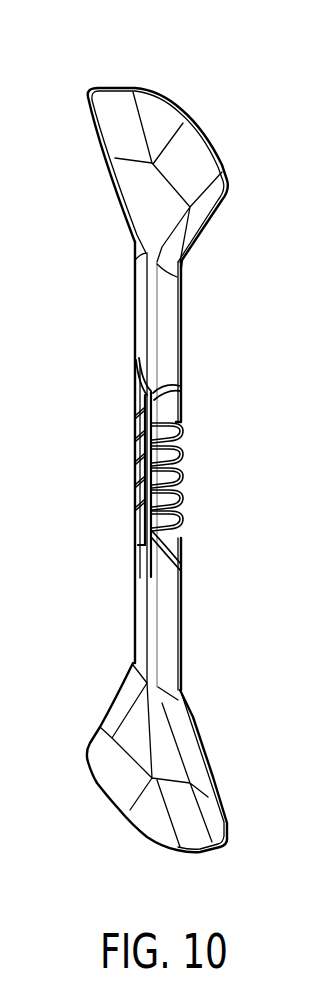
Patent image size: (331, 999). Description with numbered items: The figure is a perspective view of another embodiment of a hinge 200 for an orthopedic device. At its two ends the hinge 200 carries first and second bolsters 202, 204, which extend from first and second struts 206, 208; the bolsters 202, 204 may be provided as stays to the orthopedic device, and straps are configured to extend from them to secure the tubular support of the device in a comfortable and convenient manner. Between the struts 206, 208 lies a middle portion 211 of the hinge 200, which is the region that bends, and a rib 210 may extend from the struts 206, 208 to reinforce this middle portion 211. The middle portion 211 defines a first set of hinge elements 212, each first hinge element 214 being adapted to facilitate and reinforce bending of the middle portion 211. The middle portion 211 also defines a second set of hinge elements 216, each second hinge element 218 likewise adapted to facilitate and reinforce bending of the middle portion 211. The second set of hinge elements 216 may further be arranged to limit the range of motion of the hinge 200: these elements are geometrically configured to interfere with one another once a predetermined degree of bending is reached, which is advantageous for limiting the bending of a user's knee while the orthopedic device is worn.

The hinge 200 is at (124, 346).
The first bolster 202 is at (155, 122).
The second bolster 204 is at (122, 778).
The first strut 206 is at (182, 343).
The second strut 208 is at (179, 625).
The rib 210 is at (143, 535).
The middle portion 211 is at (140, 465).
The first set of hinge elements 212 is at (82, 391).
The first hinge element 214 is at (136, 510).
The second set of hinge elements 216 is at (186, 420).
The second hinge element 218 is at (156, 535).